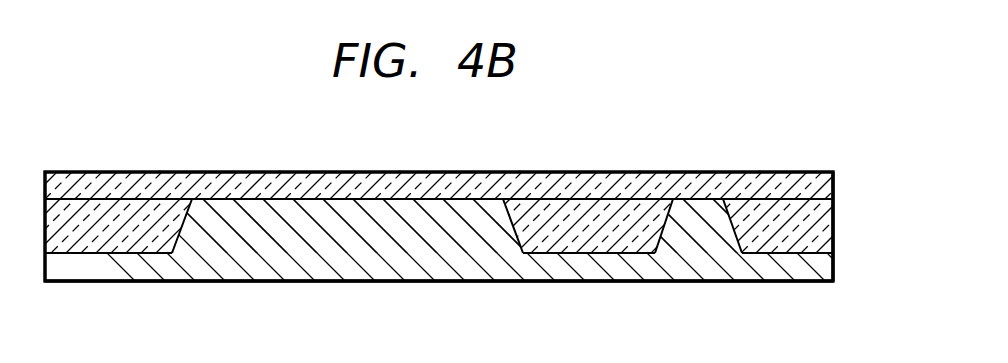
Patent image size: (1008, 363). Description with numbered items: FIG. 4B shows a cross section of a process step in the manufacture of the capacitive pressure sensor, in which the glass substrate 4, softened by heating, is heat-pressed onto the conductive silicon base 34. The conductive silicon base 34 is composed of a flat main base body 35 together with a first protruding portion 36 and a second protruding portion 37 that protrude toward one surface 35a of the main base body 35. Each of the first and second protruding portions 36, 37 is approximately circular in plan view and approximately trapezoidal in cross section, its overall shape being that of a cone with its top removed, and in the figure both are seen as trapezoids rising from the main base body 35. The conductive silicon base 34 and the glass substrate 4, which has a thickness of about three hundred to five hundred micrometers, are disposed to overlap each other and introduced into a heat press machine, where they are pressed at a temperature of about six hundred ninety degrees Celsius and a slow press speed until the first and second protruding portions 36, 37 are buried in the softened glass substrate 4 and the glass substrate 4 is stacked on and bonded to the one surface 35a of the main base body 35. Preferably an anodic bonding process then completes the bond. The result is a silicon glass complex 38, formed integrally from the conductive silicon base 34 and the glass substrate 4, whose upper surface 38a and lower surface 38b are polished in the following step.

The glass substrate 4 is at (833, 195).
The conductive silicon base 34 is at (833, 263).
The main base body 35 is at (792, 272).
The one surface of the main base body 35a is at (602, 253).
The first protruding portion 36 is at (324, 213).
The second protruding portion 37 is at (713, 215).
The silicon glass complex 38 is at (752, 158).
The upper surface of the silicon glass complex 38a is at (810, 172).
The lower surface of the silicon glass complex 38b is at (710, 281).